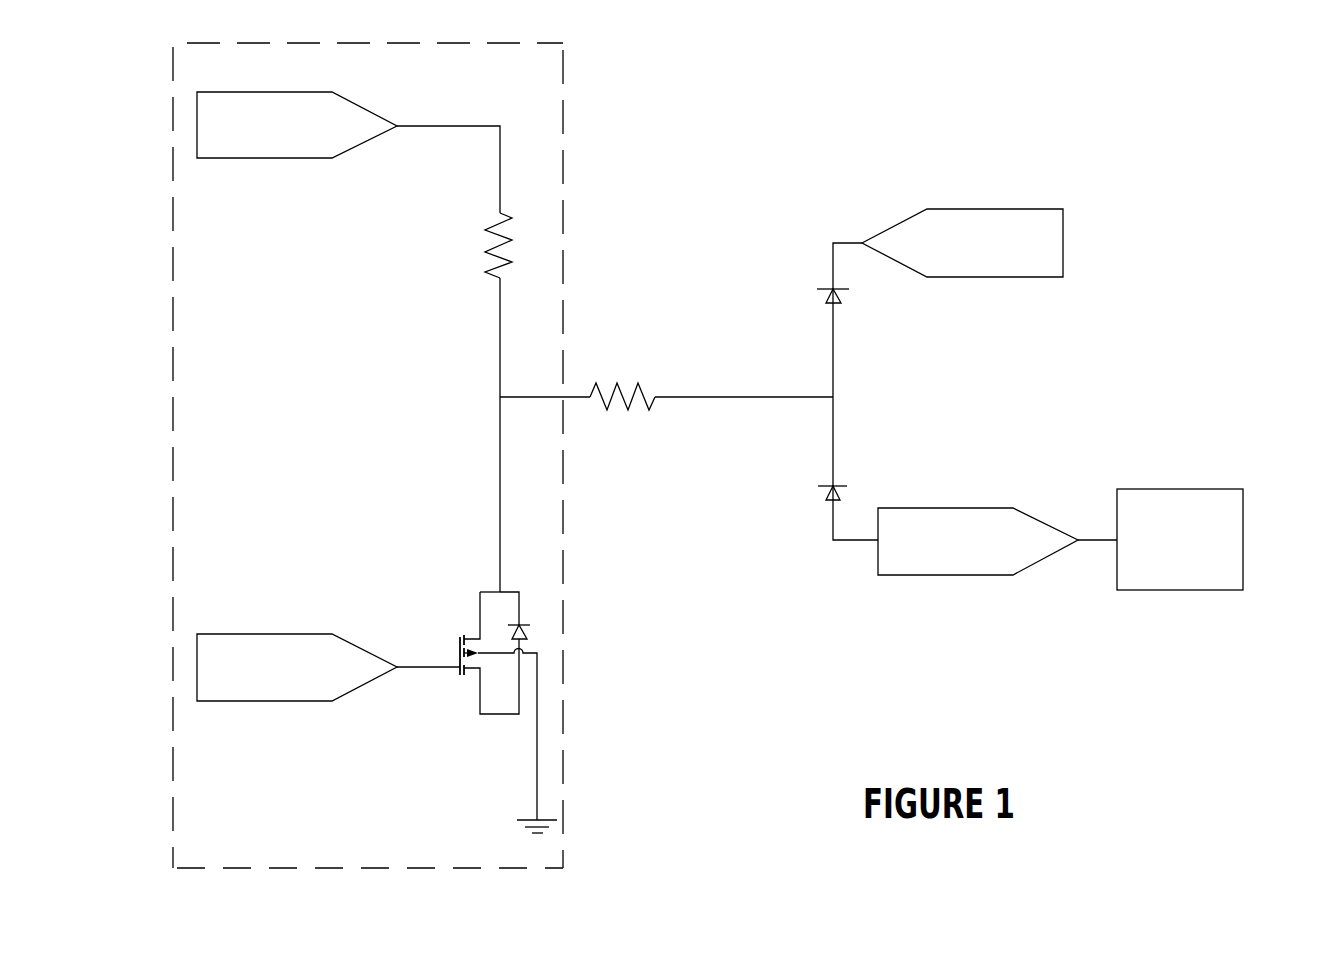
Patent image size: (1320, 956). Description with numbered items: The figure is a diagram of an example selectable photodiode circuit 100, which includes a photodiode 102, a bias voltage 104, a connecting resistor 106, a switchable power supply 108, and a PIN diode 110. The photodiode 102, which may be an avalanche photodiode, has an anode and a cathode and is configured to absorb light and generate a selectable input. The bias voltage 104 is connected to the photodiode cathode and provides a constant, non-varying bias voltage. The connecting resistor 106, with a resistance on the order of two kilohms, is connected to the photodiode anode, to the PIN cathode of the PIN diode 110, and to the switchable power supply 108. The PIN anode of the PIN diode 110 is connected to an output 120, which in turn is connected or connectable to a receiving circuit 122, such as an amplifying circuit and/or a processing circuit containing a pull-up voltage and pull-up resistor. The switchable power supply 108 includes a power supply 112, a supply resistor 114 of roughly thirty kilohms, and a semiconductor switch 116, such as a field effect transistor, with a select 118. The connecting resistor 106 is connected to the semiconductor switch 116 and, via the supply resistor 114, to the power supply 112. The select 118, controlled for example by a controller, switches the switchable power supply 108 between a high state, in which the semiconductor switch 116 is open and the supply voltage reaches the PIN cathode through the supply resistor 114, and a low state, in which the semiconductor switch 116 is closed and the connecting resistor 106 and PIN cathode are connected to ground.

The selectable photodiode circuit 100 is at (1122, 122).
The photodiode 102 is at (815, 297).
The bias voltage 104 is at (973, 253).
The connecting resistor 106 is at (630, 374).
The switchable power supply 108 is at (507, 76).
The PIN diode 110 is at (850, 490).
The power supply 112 is at (248, 139).
The supply resistor 114 is at (484, 222).
The semiconductor switch 116 is at (474, 600).
The select 118 is at (248, 679).
The output 120 is at (926, 554).
The receiving circuit 122 is at (1164, 554).